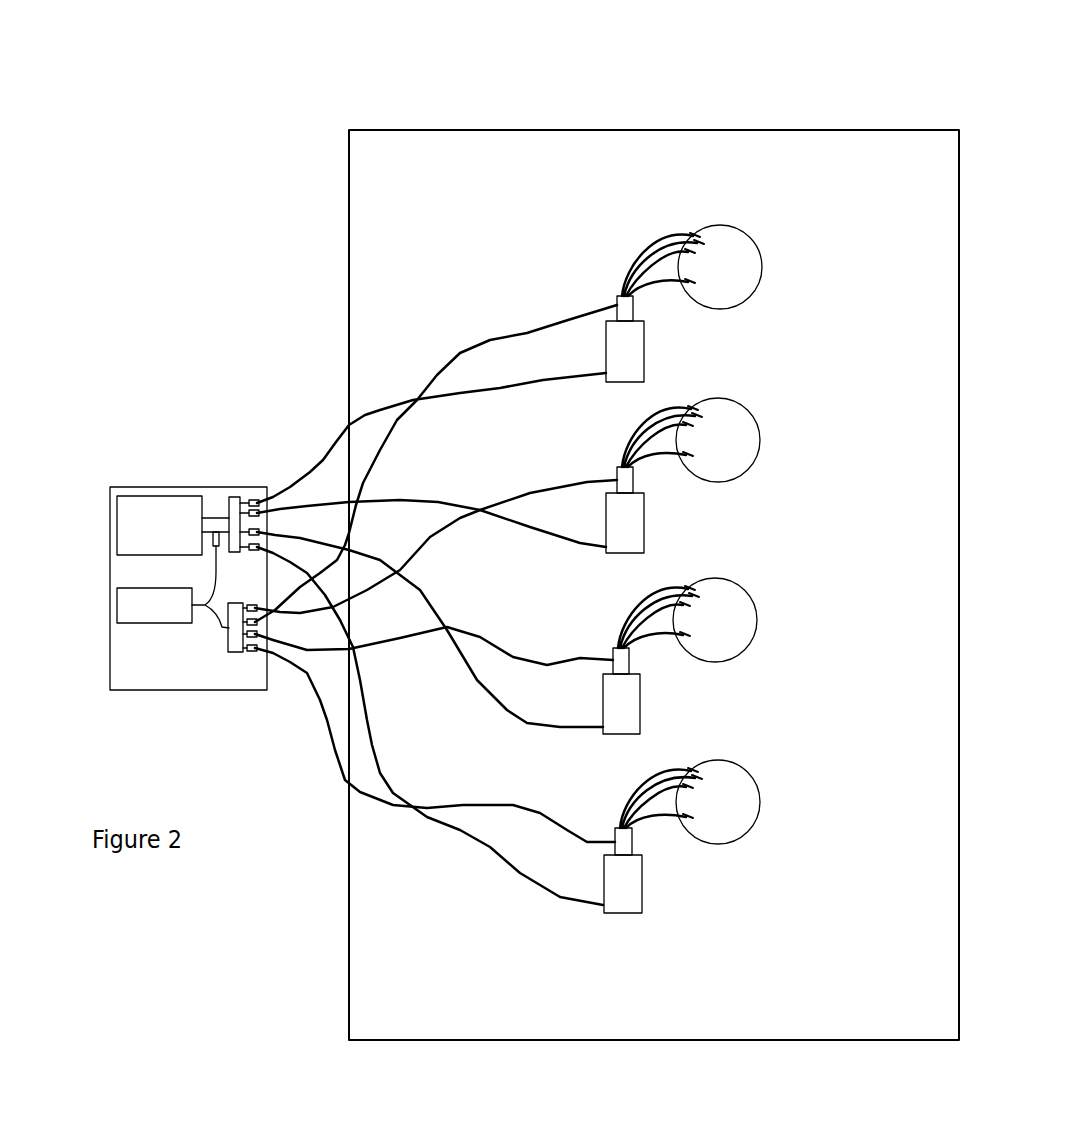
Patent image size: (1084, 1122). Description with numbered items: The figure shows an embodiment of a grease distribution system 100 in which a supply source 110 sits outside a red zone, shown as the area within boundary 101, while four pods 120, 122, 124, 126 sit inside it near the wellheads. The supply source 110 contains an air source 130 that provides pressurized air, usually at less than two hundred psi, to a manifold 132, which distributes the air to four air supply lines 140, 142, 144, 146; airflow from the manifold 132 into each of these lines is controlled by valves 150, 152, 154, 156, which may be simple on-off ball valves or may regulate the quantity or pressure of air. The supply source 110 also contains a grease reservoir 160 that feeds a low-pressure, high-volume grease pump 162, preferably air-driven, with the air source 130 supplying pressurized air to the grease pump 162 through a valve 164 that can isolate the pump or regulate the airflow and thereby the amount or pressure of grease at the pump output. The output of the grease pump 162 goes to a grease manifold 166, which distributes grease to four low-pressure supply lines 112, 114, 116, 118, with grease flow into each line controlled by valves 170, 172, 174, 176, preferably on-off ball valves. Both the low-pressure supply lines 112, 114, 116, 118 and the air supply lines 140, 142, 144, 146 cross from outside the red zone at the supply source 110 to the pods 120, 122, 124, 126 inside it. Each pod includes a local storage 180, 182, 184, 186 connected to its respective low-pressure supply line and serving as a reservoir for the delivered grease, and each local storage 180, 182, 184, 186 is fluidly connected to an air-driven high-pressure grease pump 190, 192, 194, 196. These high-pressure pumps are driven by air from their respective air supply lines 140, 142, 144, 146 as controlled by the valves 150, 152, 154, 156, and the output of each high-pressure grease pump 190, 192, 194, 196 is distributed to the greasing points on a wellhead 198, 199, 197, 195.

The grease distribution system 100 is at (610, 83).
The boundary 101 is at (822, 128).
The supply source 110 is at (118, 658).
The low-pressure supply line 112 is at (460, 393).
The low-pressure supply line 114 is at (438, 502).
The low-pressure supply line 116 is at (420, 590).
The low-pressure supply line 118 is at (393, 793).
The pod 120 is at (808, 240).
The pod 122 is at (808, 430).
The pod 124 is at (808, 597).
The pod 126 is at (808, 782).
The air source 130 is at (123, 603).
The manifold 132 is at (237, 646).
The air supply line 140 is at (568, 322).
The air supply line 142 is at (580, 487).
The air supply line 144 is at (575, 657).
The air supply line 146 is at (587, 840).
The valve 150 is at (250, 649).
The valve 152 is at (247, 636).
The valve 154 is at (247, 624).
The valve 156 is at (244, 611).
The grease reservoir 160 is at (148, 505).
The grease pump 162 is at (231, 523).
The valve 164 is at (215, 531).
The grease manifold 166 is at (226, 517).
The valve 170 is at (255, 500).
The valve 172 is at (262, 512).
The valve 174 is at (262, 532).
The valve 176 is at (262, 547).
The local storage 180 is at (633, 345).
The local storage 182 is at (633, 523).
The local storage 184 is at (627, 703).
The local storage 186 is at (628, 883).
The high-pressure grease pump 190 is at (630, 303).
The high-pressure grease pump 192 is at (630, 480).
The high-pressure grease pump 194 is at (626, 662).
The high-pressure grease pump 196 is at (629, 842).
The wellhead 195 is at (733, 822).
The wellhead 197 is at (733, 643).
The wellhead 198 is at (740, 283).
The wellhead 199 is at (737, 462).